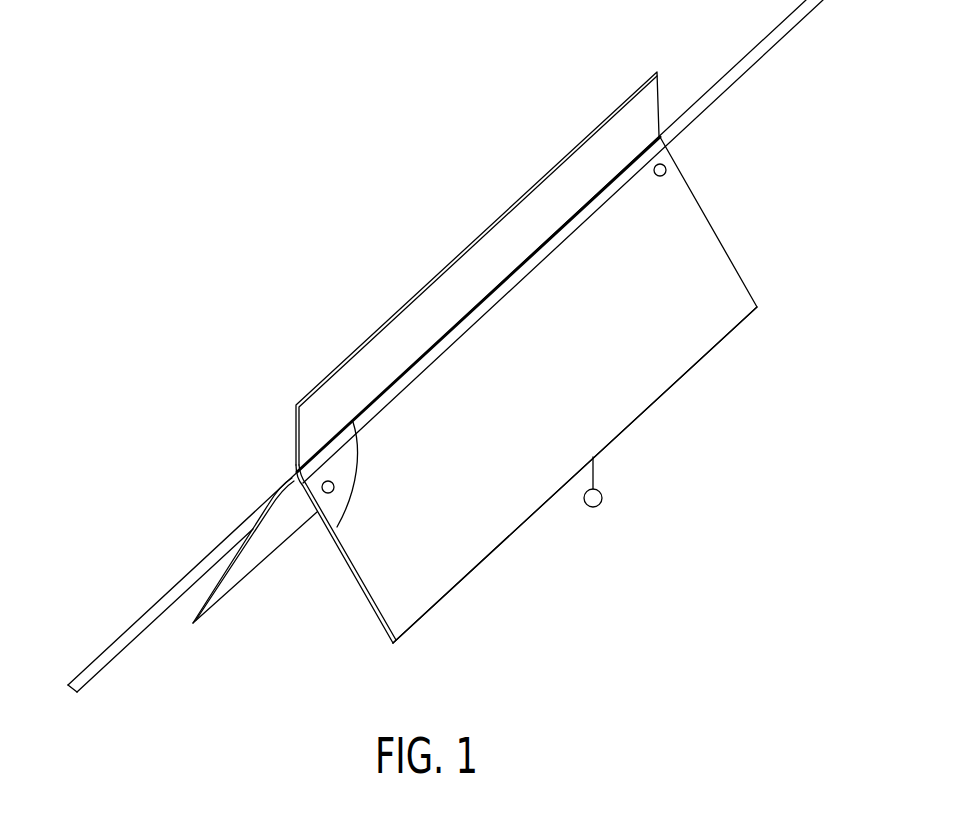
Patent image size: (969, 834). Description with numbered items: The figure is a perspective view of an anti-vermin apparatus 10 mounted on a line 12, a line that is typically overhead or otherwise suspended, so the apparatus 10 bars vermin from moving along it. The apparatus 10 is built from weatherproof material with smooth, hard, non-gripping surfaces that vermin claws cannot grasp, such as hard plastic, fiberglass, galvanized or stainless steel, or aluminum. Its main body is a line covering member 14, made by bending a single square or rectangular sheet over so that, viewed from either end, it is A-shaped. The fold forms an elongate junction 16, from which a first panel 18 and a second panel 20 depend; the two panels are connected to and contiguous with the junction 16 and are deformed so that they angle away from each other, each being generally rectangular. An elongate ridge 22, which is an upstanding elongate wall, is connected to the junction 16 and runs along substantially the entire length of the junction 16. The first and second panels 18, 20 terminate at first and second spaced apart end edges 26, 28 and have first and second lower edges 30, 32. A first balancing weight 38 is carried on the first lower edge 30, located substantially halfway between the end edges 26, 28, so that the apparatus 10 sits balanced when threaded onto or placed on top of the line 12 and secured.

The anti-vermin apparatus 10 is at (322, 108).
The line 12 is at (155, 600).
The line covering member 14 is at (502, 378).
The elongate junction 16 is at (333, 537).
The first panel 18 is at (526, 410).
The second panel 20 is at (255, 577).
The elongate ridge 22 is at (572, 165).
The first end edge 26 is at (373, 608).
The second end edge 28 is at (683, 170).
The first lower edge 30 is at (477, 565).
The second lower edge 32 is at (248, 578).
The first balancing weight 38 is at (620, 514).